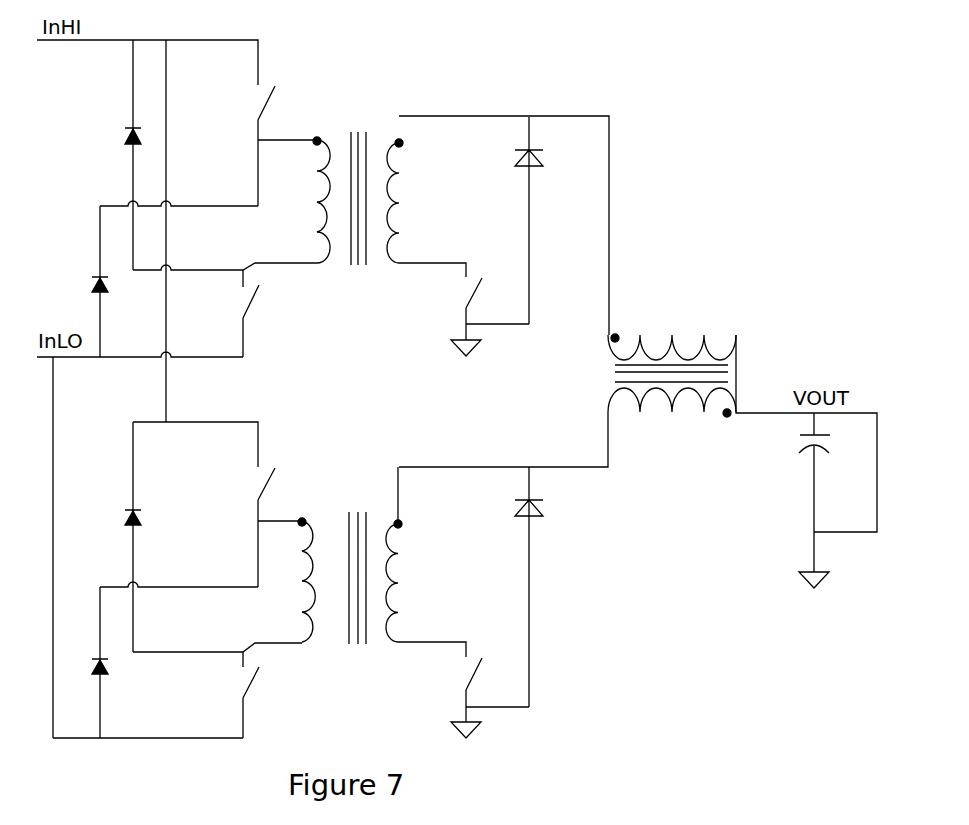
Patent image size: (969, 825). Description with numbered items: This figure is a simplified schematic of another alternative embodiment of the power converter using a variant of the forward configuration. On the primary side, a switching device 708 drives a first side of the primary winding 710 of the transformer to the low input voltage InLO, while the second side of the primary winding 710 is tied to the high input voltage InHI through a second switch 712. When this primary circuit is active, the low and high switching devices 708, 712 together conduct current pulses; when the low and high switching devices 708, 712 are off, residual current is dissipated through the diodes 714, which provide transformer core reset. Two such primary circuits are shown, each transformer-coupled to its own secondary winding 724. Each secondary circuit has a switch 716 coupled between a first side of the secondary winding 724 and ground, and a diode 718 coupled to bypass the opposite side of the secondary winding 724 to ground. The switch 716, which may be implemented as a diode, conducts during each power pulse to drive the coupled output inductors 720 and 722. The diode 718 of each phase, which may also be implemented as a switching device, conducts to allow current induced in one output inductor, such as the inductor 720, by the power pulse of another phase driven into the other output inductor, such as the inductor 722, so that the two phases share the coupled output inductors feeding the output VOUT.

The switching device 708 is at (290, 699).
The primary winding 710 is at (302, 607).
The second switch 712 is at (302, 496).
The diodes 714 is at (145, 689).
The switch 716 is at (548, 682).
The diode 718 is at (620, 521).
The output inductor 720 is at (643, 415).
The output inductor 722 is at (640, 333).
The secondary winding 724 is at (430, 593).